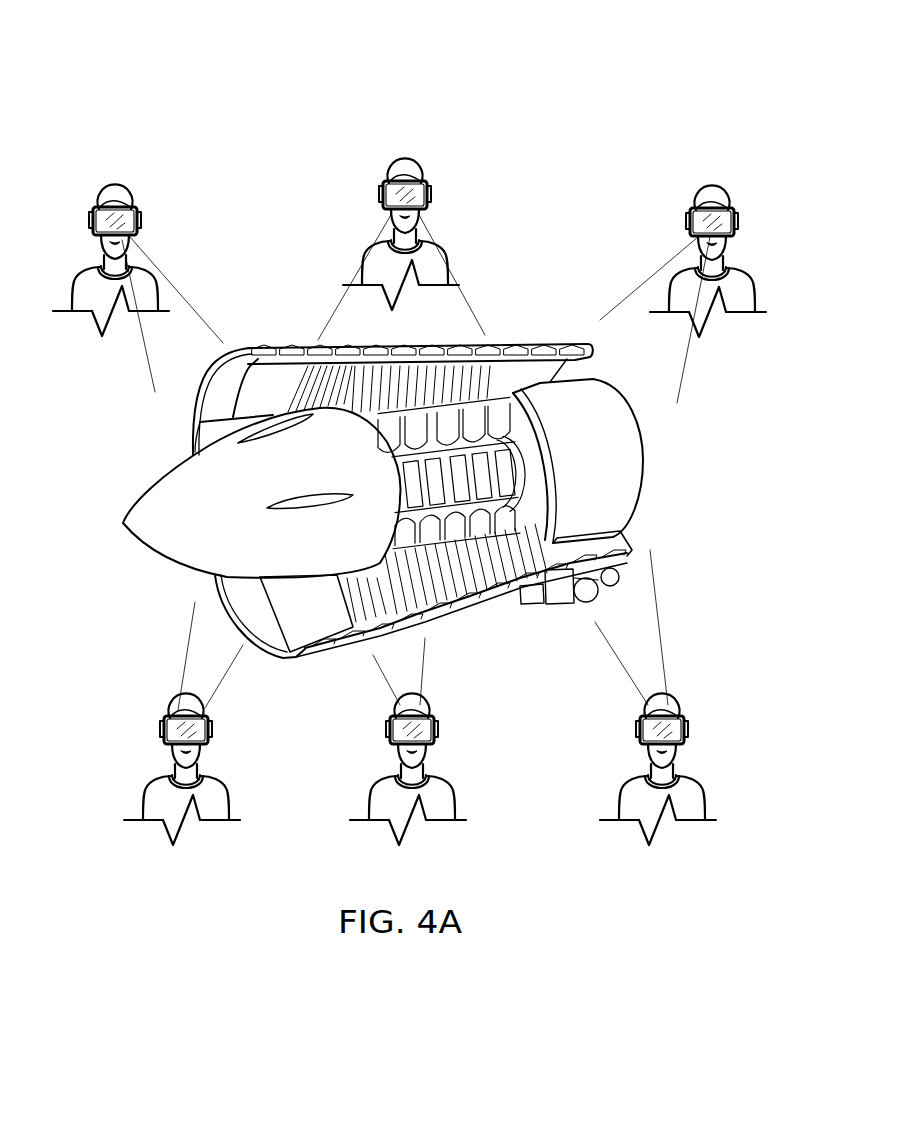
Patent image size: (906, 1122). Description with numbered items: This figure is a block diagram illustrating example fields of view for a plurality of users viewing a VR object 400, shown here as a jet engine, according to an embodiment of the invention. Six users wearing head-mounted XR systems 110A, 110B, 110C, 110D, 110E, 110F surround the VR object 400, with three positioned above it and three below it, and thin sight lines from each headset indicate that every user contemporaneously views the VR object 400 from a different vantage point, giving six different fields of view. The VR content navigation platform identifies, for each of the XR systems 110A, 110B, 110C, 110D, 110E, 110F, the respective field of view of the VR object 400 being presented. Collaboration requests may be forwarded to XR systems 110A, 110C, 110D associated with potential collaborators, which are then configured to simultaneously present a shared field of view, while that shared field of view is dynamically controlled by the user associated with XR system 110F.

The VR object 400 is at (168, 43).
The XR system 110A is at (113, 184).
The XR system 110B is at (405, 158).
The XR system 110C is at (714, 185).
The XR system 110D is at (157, 780).
The XR system 110E is at (383, 780).
The XR system 110F is at (633, 780).